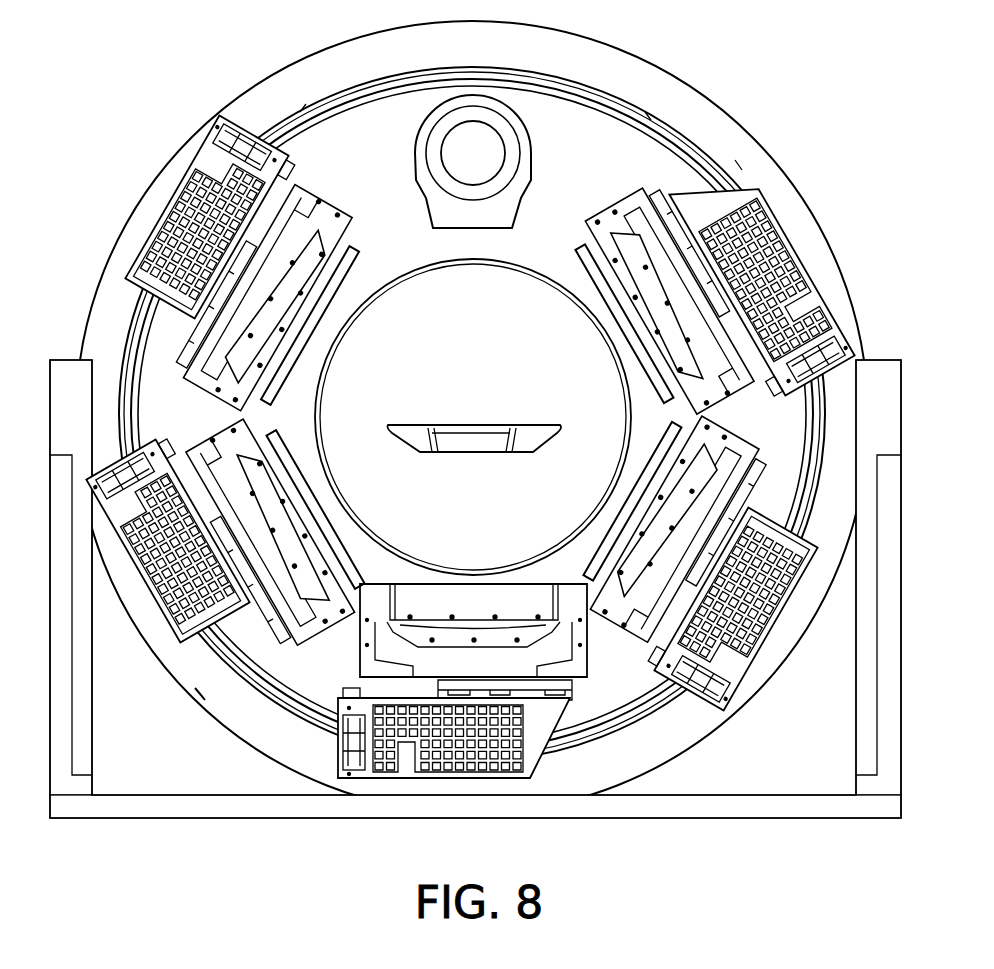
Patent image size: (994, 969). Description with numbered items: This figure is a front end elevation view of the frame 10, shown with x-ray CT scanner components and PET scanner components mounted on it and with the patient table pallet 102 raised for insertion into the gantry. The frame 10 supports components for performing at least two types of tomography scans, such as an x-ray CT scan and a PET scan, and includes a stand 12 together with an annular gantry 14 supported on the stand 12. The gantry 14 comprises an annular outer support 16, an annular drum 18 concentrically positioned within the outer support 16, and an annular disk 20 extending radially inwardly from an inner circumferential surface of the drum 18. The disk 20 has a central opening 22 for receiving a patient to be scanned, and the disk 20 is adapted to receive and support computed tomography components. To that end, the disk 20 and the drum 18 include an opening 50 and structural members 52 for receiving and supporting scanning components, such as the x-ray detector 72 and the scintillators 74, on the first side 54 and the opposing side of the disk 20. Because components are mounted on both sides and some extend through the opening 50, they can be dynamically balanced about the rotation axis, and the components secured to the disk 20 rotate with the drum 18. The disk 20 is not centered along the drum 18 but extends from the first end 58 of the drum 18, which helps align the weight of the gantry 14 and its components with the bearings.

The frame 10 is at (745, 72).
The stand 12 is at (221, 805).
The annular gantry 14 is at (198, 708).
The annular outer support 16 is at (615, 60).
The annular drum 18 is at (652, 122).
The annular disk 20 is at (714, 124).
The central opening 22 is at (545, 284).
The opening 50 is at (532, 180).
The structural member 52 is at (372, 258).
The first side 54 is at (404, 108).
The first end 58 is at (742, 167).
The x-ray detector 72 is at (506, 136).
The scintillator 74 is at (288, 156).
The patient table pallet 102 is at (446, 455).